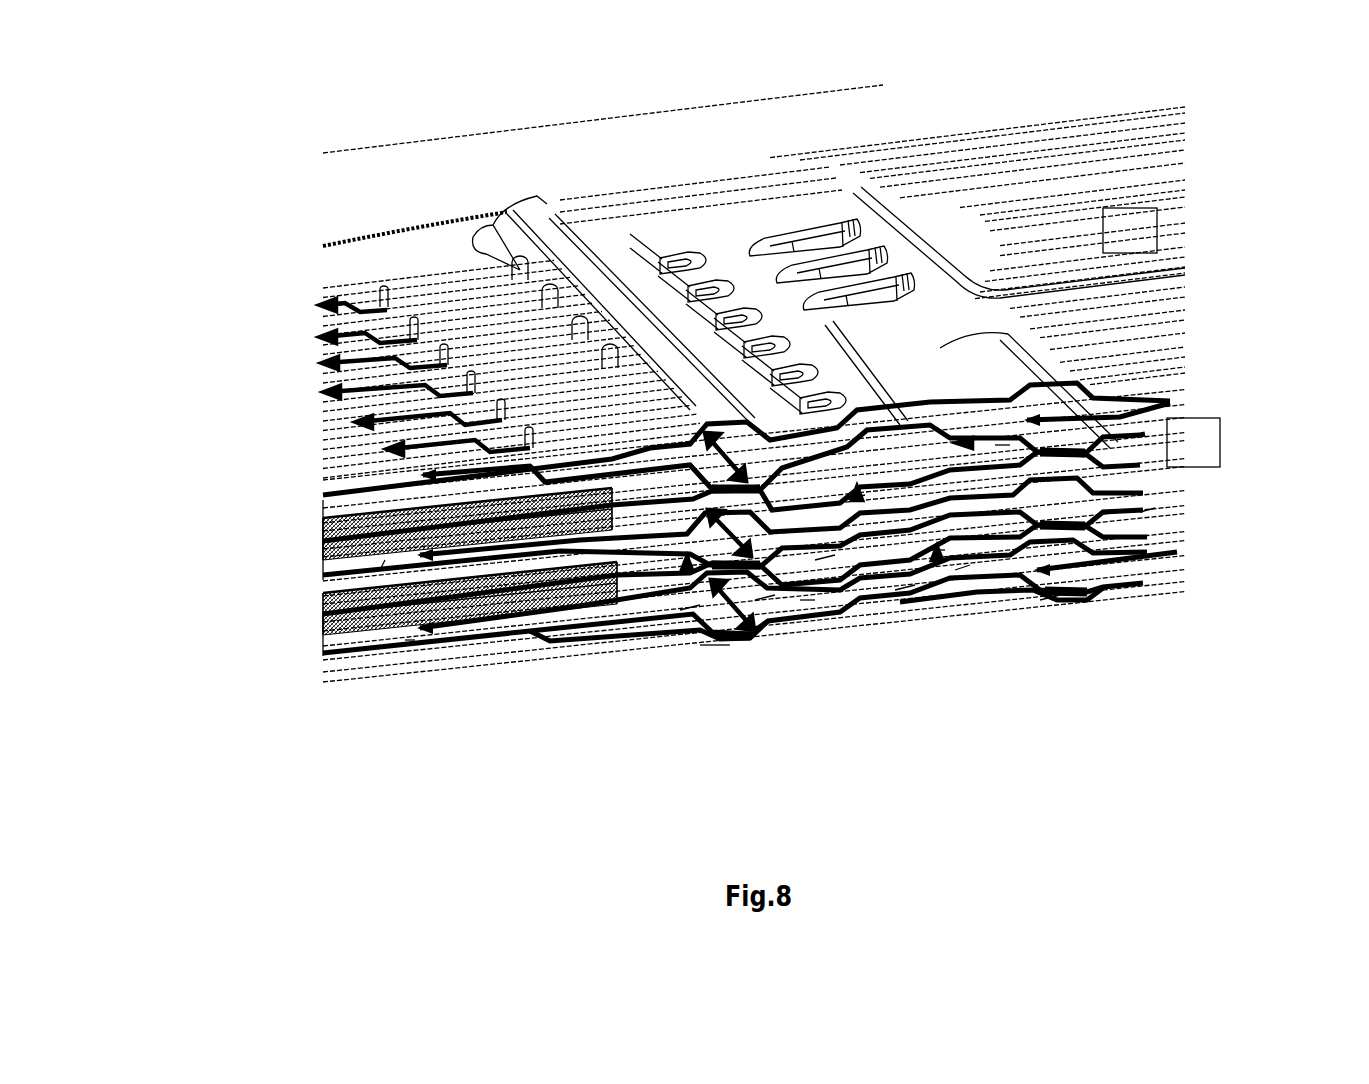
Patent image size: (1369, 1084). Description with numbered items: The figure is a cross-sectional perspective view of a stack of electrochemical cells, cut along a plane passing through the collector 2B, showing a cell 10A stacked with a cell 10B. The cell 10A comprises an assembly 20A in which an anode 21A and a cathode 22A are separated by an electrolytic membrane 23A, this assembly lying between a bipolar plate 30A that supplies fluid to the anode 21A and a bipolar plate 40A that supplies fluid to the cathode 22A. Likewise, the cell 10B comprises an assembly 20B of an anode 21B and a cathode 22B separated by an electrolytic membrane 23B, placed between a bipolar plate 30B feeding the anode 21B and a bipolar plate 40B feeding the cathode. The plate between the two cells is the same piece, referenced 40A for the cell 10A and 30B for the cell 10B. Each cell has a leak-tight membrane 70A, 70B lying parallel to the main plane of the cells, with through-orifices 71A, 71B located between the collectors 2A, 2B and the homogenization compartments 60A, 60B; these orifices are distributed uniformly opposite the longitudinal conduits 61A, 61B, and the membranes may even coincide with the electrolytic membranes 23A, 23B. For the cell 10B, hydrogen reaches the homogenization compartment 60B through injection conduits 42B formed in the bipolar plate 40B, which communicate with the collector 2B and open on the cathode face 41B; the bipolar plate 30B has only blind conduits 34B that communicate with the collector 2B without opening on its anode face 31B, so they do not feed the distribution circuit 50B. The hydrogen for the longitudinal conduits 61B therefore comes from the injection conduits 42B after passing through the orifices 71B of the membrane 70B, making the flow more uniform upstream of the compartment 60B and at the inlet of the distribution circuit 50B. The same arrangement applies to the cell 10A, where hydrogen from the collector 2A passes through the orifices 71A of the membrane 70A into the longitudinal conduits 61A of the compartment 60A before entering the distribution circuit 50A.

The collector 2A is at (1130, 230).
The collector 2B is at (1193, 442).
The cell 10A is at (188, 666).
The cell 10B is at (188, 541).
The assembly 20A is at (258, 631).
The assembly 20B is at (300, 521).
The anode 21A is at (320, 633).
The anode 21B is at (320, 560).
The cathode 22A is at (320, 593).
The cathode 22B is at (320, 521).
The electrolytic membrane 23A is at (320, 613).
The electrolytic membrane 23B is at (320, 542).
The bipolar plate 30A is at (1170, 569).
The bipolar plate 30B is at (865, 519).
The anode face 31B is at (960, 565).
The conduits 34B is at (1045, 600).
The bipolar plate 40A is at (1172, 480).
The bipolar plate 40B is at (1190, 394).
The cathode face 41B is at (1148, 510).
The injection conduits 42B is at (1000, 450).
The distribution circuit 50A is at (410, 648).
The distribution circuit 50B is at (380, 575).
The homogenization compartment 60A is at (712, 665).
The homogenization compartment 60B is at (683, 572).
The longitudinal conduits 61A is at (808, 625).
The longitudinal conduits 61B is at (763, 642).
The leak-tight membrane 70A is at (937, 560).
The leak-tight membrane 70B is at (853, 500).
The orifices 71A is at (907, 590).
The orifices 71B is at (825, 560).